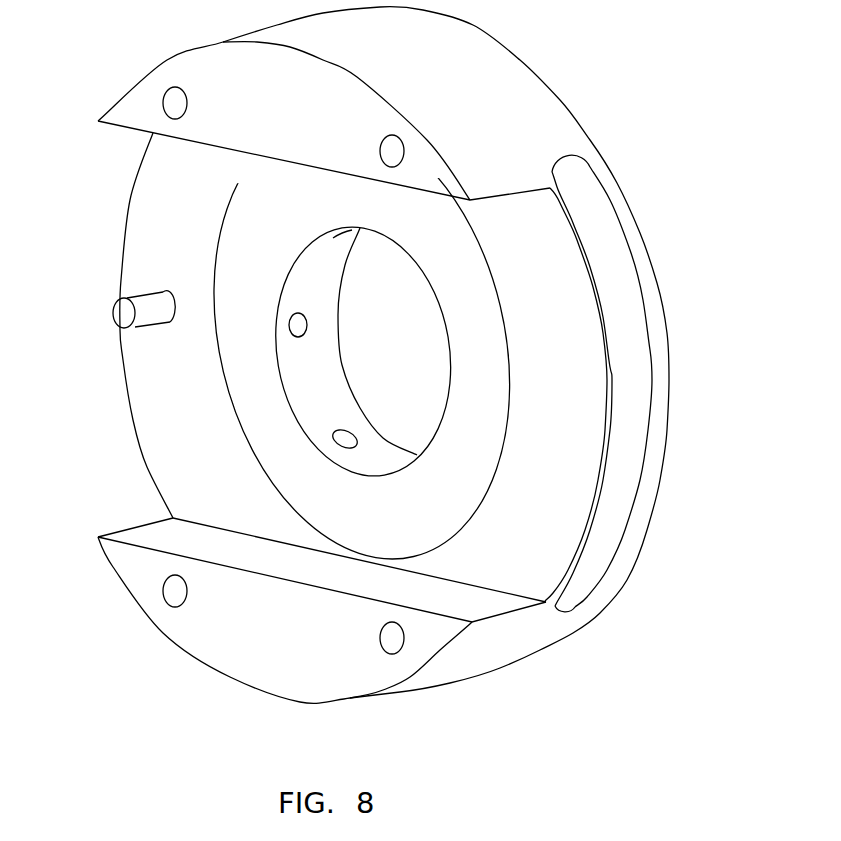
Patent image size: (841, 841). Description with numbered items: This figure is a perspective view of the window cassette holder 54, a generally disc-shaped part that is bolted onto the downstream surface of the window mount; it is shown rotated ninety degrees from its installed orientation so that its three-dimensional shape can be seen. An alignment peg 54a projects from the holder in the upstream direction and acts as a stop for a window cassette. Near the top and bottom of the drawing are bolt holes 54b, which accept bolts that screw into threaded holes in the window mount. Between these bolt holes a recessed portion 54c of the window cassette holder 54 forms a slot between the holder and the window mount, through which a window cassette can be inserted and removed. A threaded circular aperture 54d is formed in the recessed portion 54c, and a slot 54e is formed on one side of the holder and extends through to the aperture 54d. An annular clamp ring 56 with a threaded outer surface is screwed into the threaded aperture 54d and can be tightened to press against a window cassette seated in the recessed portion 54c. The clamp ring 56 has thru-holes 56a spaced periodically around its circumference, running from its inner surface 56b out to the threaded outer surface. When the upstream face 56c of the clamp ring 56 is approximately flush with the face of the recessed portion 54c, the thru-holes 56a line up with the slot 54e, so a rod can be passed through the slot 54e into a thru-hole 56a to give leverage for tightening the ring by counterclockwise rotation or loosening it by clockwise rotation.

The window cassette holder 54 is at (517, 75).
The alignment peg 54a is at (122, 316).
The bolt holes 54b is at (171, 87).
The recessed portion 54c is at (555, 547).
The threaded circular aperture 54d is at (235, 420).
The slot 54e is at (632, 487).
The annular clamp ring 56 is at (238, 247).
The thru-holes 56a is at (307, 327).
The inner surface 56b is at (380, 452).
The upstream face 56c is at (478, 288).